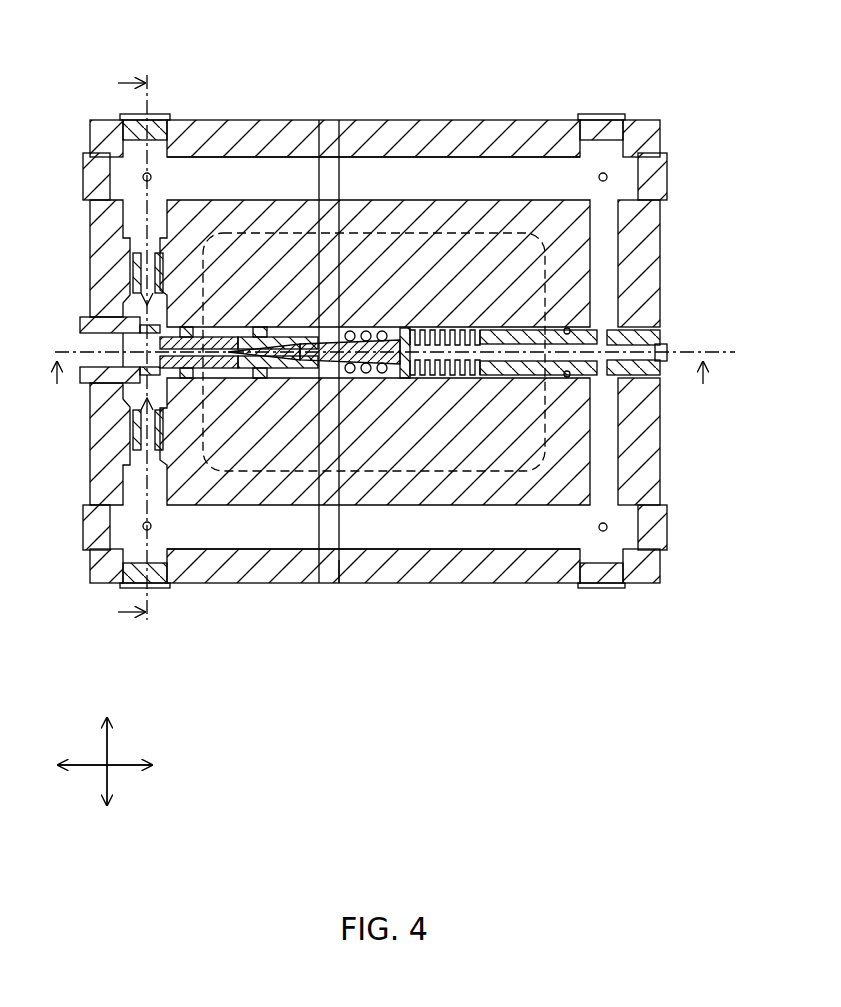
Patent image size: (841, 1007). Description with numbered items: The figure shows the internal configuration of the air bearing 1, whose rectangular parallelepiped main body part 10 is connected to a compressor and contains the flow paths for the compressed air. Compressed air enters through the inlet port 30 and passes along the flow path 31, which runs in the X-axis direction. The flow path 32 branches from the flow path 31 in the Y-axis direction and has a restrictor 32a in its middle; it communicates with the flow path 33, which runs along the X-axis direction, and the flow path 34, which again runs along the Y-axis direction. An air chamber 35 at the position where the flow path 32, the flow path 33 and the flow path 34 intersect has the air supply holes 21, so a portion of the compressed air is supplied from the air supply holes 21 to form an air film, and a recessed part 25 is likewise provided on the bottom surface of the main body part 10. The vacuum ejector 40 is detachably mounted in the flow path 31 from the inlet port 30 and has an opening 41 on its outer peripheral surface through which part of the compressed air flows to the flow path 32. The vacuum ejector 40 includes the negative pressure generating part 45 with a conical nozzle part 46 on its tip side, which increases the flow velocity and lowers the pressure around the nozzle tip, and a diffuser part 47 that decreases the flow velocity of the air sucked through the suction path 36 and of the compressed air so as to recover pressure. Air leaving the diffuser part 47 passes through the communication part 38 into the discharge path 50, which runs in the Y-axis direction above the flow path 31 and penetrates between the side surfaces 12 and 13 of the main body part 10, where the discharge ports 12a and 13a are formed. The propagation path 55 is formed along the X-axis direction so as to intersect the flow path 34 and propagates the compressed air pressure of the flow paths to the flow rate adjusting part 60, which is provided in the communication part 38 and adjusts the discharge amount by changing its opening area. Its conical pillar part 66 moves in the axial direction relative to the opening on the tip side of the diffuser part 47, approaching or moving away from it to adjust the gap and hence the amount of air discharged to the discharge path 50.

The air bearing 1 is at (405, 58).
The main body part 10 is at (505, 120).
The side surface 12 is at (242, 120).
The discharge port 12a is at (339, 120).
The side surface 13 is at (258, 583).
The discharge port 13a is at (339, 583).
The air supply hole 21 is at (150, 172).
The recessed part 25 is at (455, 233).
The inlet port 30 is at (80, 343).
The flow path 31 is at (115, 300).
The flow path 32 is at (130, 228).
The restrictor 32a is at (160, 292).
The flow path 33 is at (290, 152).
The flow path 34 is at (640, 272).
The air chamber 35 is at (125, 185).
The suction path 36 is at (250, 370).
The communication part 38 is at (292, 368).
The vacuum ejector 40 is at (168, 333).
The opening 41 is at (135, 338).
The negative pressure generating part 45 is at (234, 326).
The nozzle part 46 is at (240, 345).
The diffuser part 47 is at (300, 340).
The discharge path 50 is at (370, 145).
The propagation path 55 is at (522, 366).
The flow rate adjusting part 60 is at (360, 372).
The pillar part 66 is at (398, 378).